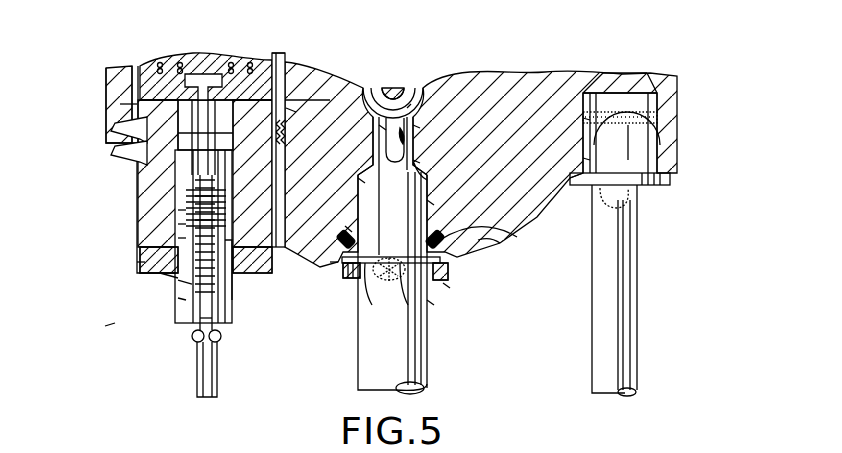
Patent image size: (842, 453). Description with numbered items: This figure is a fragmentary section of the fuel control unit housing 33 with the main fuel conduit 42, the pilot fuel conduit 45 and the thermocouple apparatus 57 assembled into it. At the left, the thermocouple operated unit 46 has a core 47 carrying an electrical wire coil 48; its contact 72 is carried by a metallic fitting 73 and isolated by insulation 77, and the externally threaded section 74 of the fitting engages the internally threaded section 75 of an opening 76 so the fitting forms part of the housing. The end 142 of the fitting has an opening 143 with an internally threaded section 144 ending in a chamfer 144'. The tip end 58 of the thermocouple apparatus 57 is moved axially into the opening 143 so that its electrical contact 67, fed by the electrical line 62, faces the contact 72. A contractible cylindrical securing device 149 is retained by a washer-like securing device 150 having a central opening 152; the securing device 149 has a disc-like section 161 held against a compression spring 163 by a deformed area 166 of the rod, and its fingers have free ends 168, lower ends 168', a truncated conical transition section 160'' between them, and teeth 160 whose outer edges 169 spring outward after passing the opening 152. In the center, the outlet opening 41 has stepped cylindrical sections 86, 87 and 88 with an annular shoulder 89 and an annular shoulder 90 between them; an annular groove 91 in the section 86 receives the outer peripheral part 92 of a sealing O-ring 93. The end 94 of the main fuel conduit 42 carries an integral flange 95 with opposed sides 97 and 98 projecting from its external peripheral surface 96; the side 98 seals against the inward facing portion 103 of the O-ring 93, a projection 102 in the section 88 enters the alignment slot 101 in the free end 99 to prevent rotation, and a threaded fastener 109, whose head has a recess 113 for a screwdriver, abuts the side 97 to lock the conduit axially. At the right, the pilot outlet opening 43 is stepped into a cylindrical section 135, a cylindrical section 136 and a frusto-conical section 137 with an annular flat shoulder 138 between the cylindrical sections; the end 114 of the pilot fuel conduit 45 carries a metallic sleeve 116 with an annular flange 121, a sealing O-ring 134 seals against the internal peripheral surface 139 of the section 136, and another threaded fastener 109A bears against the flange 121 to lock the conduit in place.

The housing 33 is at (522, 78).
The metallic fitting 73 is at (137, 165).
The electrical wire coil 48 is at (128, 63).
The core 47 is at (250, 60).
The thermocouple operated unit 46 is at (170, 58).
The teeth 160 is at (258, 150).
The opening 76 is at (278, 60).
The externally threaded section 74 is at (112, 129).
The contact 72 is at (112, 151).
The internally threaded section 75 is at (128, 106).
The thermocouple apparatus 57 is at (168, 318).
The truncated conical transition section 160'' is at (246, 215).
The electrical contact 67 is at (175, 188).
The tip end 58 is at (238, 305).
The compression spring 163 is at (222, 321).
The disc-like section 161 is at (190, 334).
The deformed area 166 is at (220, 344).
The electrical line 62 is at (198, 376).
The chamfer 144' is at (122, 260).
The outer edges 169 is at (268, 260).
The internally threaded section 144 is at (101, 210).
The opening 143 is at (178, 225).
The free ends 168 is at (99, 243).
The end 142 is at (137, 270).
The securing device 150 is at (165, 278).
The opening 152 is at (190, 283).
The contractible cylindrical securing device 149 is at (183, 300).
The lower ends 168' is at (74, 341).
The insulation 77 is at (286, 110).
The cylindrical section 87 is at (358, 184).
The annular groove 91 is at (345, 228).
The outer peripheral part 92 is at (335, 264).
The projection 102 is at (393, 98).
The inward facing portion 103 is at (382, 216).
The end 94 is at (358, 365).
The recess or indentation 113 is at (426, 344).
The main fuel conduit 42 is at (430, 368).
The side 97 is at (356, 270).
The integral flange 95 is at (452, 266).
The sealing O-ring 93 is at (450, 254).
The threaded fastener 109 is at (386, 275).
The side 98 is at (378, 254).
The free end 99 is at (378, 130).
The alignment slot 101 is at (410, 108).
The cylindrical section 88 is at (412, 130).
The annular shoulder 90 is at (420, 163).
The outlet opening 41 is at (428, 206).
The cylindrical section 86 is at (443, 288).
The external peripheral surface 96 is at (430, 305).
The annular shoulder 89 is at (508, 232).
The pilot outlet opening 43 is at (668, 131).
The frusto-conical section 137 is at (640, 72).
The internal peripheral surface 139 is at (621, 93).
The sealing O-ring 134 is at (658, 117).
The metallic sleeve 116 is at (668, 152).
The annular flange 121 is at (672, 183).
The end 114 is at (638, 246).
The pilot fuel conduit 45 is at (637, 316).
The threaded fastener 109A is at (626, 203).
The cylindrical section 136 is at (588, 122).
The annular flat shoulder 138 is at (588, 160).
The cylindrical section 135 is at (584, 190).